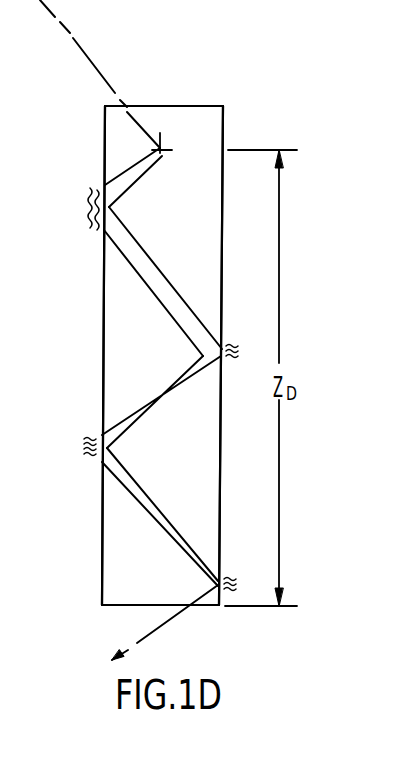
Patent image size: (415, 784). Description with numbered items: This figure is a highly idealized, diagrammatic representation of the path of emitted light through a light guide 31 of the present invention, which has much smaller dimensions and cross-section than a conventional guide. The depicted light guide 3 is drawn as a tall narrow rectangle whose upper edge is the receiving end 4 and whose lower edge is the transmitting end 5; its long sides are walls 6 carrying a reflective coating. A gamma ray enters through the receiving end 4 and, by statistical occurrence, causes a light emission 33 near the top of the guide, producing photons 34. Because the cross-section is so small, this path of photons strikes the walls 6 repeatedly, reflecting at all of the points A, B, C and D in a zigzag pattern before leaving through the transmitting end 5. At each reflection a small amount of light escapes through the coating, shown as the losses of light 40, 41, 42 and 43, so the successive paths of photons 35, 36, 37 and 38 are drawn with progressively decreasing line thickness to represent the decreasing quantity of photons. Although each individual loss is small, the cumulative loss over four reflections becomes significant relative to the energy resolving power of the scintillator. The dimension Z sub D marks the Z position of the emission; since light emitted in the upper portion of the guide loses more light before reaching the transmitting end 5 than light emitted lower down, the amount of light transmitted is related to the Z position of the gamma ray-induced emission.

The light guide 3 is at (188, 441).
The receiving end 4 is at (171, 105).
The transmitting end 5 is at (123, 607).
The wall 6 is at (103, 294).
The light guide of the present invention 31 is at (209, 113).
The light emission 33 is at (172, 150).
The photons 34 is at (119, 173).
The path of photons 35 is at (153, 260).
The path of photons 36 is at (142, 400).
The path of photons 37 is at (150, 502).
The path of photons 38 is at (172, 618).
The loss of light 40 is at (90, 184).
The loss of light 41 is at (229, 344).
The loss of light 42 is at (90, 437).
The loss of light 43 is at (228, 580).
The reflection point A is at (65, 198).
The reflection point B is at (250, 352).
The reflection point C is at (70, 447).
The reflection point D is at (247, 583).